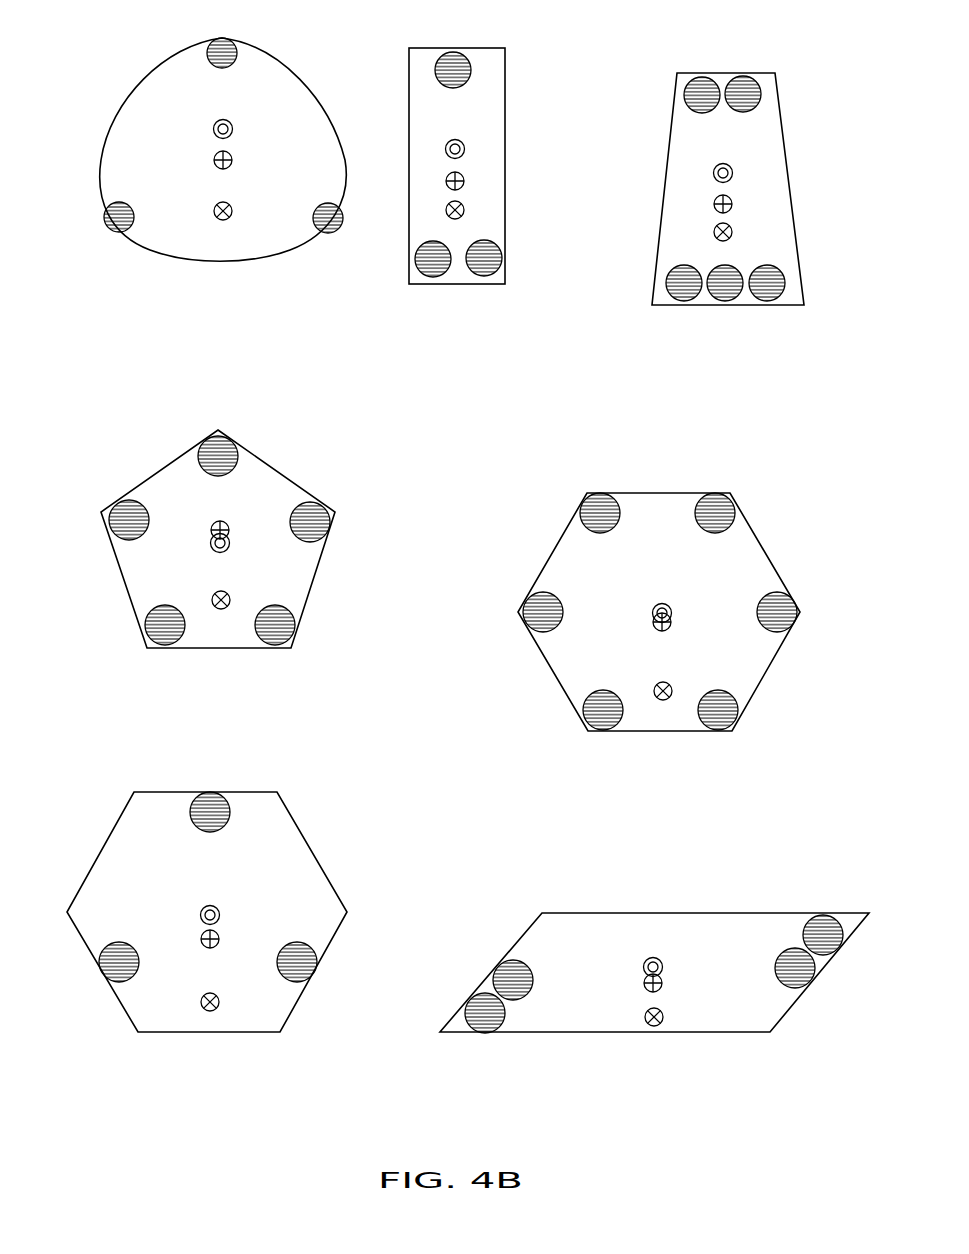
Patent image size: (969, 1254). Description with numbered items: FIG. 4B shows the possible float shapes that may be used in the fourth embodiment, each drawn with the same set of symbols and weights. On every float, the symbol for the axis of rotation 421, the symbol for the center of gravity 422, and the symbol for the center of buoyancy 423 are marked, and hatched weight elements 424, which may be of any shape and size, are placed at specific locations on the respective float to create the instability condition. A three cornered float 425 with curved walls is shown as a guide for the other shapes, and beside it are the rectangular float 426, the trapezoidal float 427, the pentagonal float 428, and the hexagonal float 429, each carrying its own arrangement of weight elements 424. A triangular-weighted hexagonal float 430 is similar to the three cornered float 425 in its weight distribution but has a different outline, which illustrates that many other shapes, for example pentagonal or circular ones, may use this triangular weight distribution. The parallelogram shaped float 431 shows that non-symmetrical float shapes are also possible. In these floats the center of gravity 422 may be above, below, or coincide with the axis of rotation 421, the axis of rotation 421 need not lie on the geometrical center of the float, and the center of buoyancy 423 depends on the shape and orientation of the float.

The axis of rotation 421 is at (213, 128).
The center of gravity 422 is at (213, 160).
The center of buoyancy 423 is at (213, 218).
The weight elements 424 is at (237, 45).
The three cornered float 425 is at (232, 243).
The rectangular float 426 is at (483, 285).
The trapezoidal float 427 is at (737, 307).
The pentagonal float 428 is at (218, 640).
The hexagonal float 429 is at (666, 724).
The triangular-weighted hexagonal float 430 is at (200, 1034).
The parallelogram shaped float 431 is at (603, 1034).